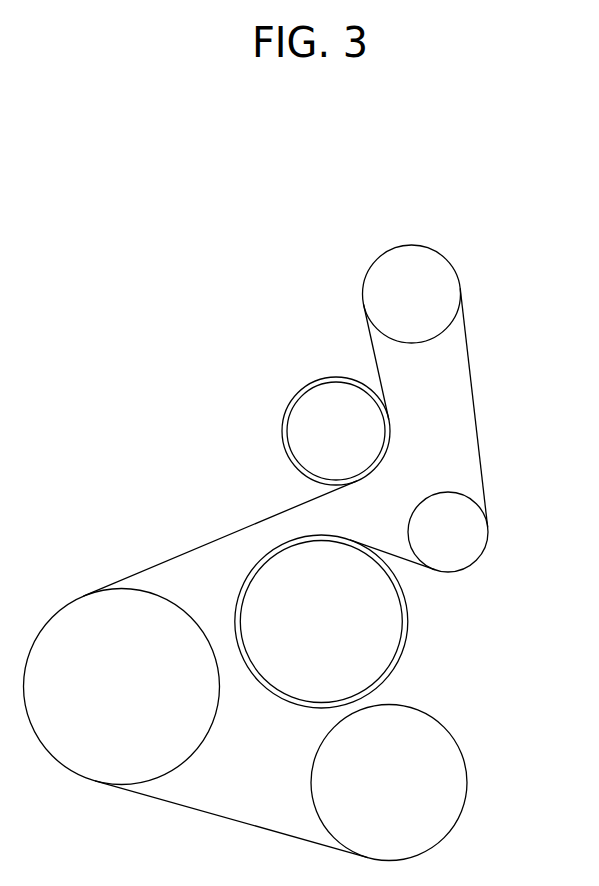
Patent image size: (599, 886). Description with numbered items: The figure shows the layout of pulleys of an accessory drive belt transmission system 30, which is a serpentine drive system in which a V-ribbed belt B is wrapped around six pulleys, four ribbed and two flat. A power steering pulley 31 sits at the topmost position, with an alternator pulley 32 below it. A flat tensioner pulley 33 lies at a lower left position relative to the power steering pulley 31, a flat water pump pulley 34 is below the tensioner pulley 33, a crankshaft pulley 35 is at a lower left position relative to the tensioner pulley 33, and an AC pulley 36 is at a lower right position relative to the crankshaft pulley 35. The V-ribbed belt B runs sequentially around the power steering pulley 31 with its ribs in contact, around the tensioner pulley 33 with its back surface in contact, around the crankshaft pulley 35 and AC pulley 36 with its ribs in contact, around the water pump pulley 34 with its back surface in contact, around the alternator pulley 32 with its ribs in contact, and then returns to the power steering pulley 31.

The accessory drive belt transmission system 30 is at (202, 257).
The power steering pulley 31 is at (437, 267).
The alternator pulley 32 is at (458, 548).
The tensioner pulley 33 is at (313, 407).
The water pump pulley 34 is at (383, 621).
The crankshaft pulley 35 is at (73, 762).
The AC pulley 36 is at (445, 795).
The V-ribbed belt B is at (222, 538).